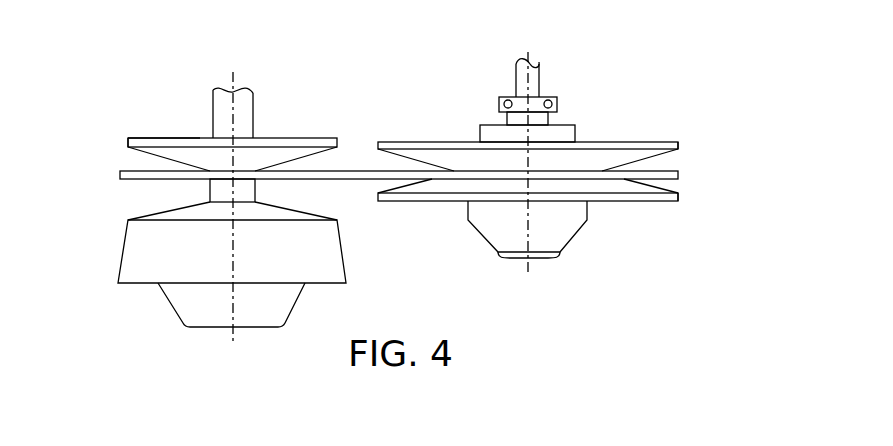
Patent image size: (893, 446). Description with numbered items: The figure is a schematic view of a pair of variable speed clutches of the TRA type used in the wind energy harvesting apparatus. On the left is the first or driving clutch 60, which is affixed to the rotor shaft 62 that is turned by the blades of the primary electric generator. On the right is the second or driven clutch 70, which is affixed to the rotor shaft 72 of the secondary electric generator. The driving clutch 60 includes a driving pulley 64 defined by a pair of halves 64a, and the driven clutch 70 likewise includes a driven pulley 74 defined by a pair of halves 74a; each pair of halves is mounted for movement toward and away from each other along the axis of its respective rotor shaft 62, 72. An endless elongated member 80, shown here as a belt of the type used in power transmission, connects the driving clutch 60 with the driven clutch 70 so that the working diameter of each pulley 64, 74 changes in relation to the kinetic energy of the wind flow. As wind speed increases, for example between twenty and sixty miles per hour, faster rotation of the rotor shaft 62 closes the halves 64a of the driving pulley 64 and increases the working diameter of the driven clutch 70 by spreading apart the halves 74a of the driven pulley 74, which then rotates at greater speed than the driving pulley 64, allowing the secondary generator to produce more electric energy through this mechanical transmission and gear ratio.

The driving clutch 60 is at (96, 279).
The rotor shaft 62 is at (232, 122).
The driving pulley 64 is at (175, 150).
The pulley halves 64a is at (129, 143).
The driven clutch 70 is at (653, 246).
The rotor shaft 72 is at (528, 88).
The driven pulley 74 is at (607, 152).
The pulley halves 74a is at (678, 146).
The endless elongated member 80 is at (343, 179).